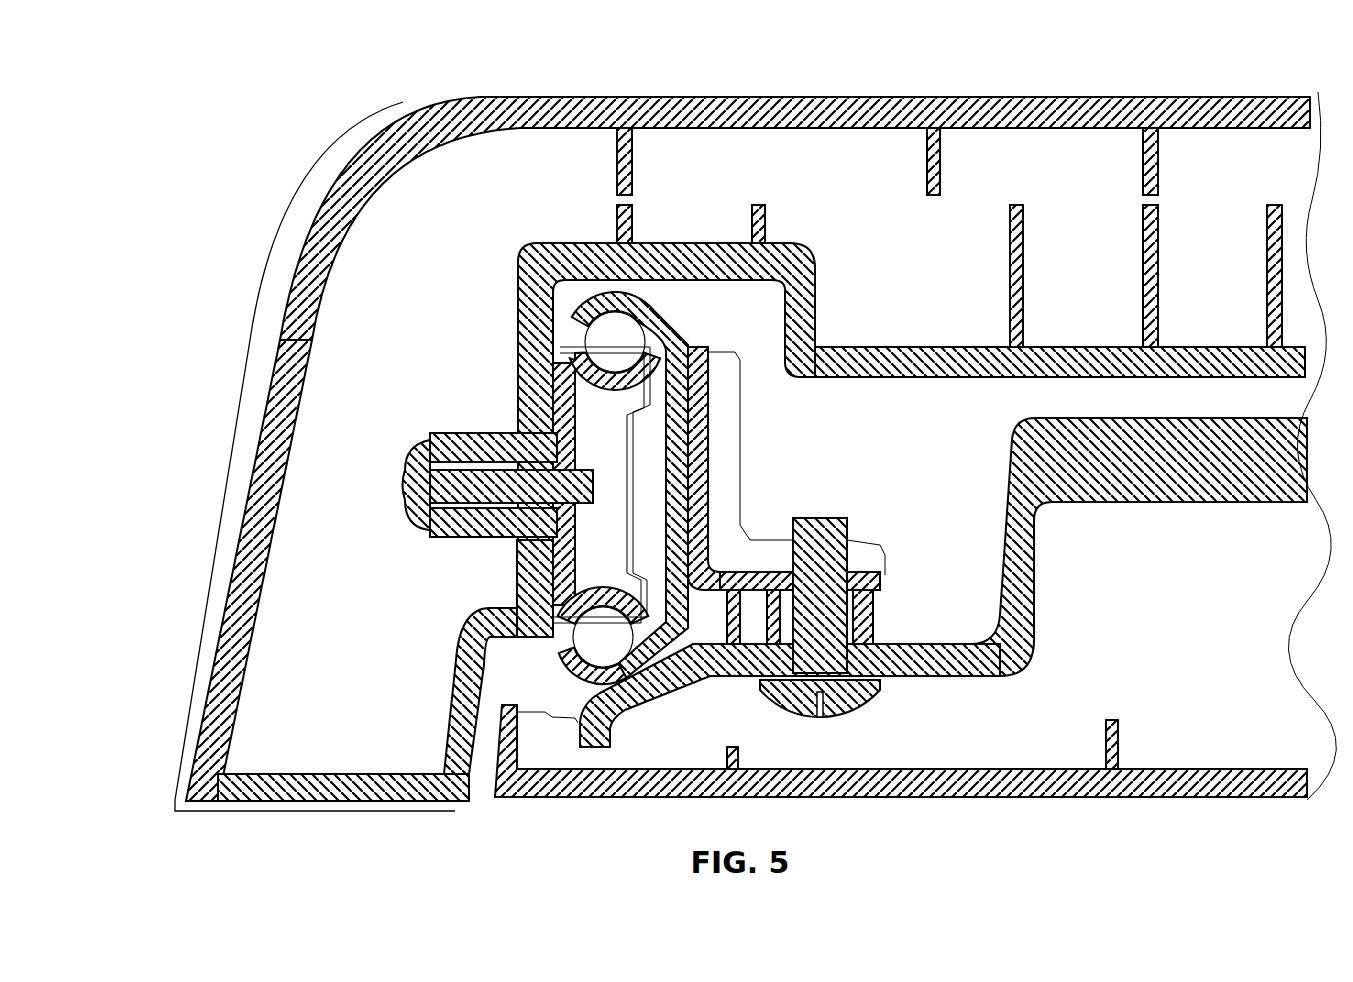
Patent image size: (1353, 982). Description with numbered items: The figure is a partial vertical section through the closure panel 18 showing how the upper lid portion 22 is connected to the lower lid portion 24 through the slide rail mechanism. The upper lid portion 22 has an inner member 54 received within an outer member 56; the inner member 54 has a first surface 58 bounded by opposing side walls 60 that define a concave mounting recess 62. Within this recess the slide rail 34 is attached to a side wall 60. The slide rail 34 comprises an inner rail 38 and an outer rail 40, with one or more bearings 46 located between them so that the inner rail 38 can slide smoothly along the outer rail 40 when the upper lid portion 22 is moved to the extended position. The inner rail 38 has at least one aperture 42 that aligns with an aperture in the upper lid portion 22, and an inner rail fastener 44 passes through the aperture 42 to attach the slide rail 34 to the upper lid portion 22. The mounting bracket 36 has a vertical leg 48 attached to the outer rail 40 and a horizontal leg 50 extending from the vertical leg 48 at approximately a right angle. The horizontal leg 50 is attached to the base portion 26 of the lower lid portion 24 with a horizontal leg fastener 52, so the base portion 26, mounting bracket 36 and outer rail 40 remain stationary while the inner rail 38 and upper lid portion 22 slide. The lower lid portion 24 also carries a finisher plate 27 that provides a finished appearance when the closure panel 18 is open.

The closure panel 18 is at (710, 449).
The upper lid portion 22 is at (425, 100).
The lower lid portion 24 is at (1046, 804).
The base portion 26 is at (1012, 428).
The finisher plate 27 is at (1175, 800).
The slide rail 34 is at (578, 315).
The mounting bracket 36 is at (715, 396).
The inner rail 38 is at (565, 355).
The outer rail 40 is at (690, 332).
The aperture 42 is at (552, 440).
The inner rail fastener 44 is at (405, 462).
The bearing 46 is at (650, 325).
The vertical leg 48 is at (710, 434).
The horizontal leg 50 is at (885, 577).
The horizontal leg fastener 52 is at (822, 520).
The inner member 54 is at (278, 810).
The outer member 56 is at (280, 340).
The first surface 58 is at (1258, 348).
The side wall 60 is at (512, 568).
The concave mounting recess 62 is at (1038, 400).